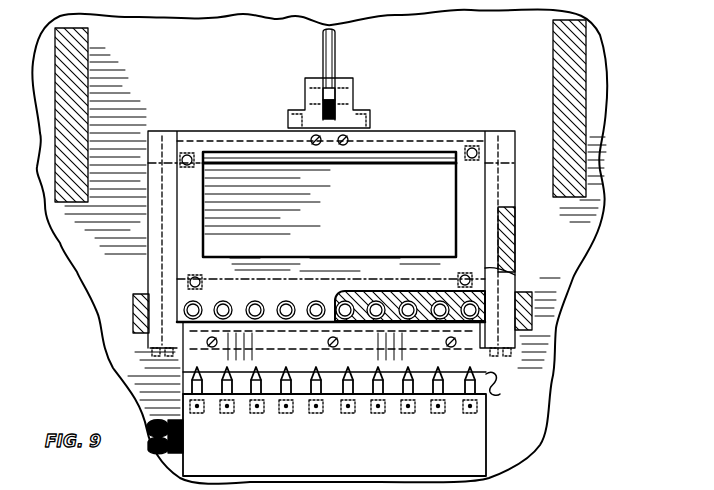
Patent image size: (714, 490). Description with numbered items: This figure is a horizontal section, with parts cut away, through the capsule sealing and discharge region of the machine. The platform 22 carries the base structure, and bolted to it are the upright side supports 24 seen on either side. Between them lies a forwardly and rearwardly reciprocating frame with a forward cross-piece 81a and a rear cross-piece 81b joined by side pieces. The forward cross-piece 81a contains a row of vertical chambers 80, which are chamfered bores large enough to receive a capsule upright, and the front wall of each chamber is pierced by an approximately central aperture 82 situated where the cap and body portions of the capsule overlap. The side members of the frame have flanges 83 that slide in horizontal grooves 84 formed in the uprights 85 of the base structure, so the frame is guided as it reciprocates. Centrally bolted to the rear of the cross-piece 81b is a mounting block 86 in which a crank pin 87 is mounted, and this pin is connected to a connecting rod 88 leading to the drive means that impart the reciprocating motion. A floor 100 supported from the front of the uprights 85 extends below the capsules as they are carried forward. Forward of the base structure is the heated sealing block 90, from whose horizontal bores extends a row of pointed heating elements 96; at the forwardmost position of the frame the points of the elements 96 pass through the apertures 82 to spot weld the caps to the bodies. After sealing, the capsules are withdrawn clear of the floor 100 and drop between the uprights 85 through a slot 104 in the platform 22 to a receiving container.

The platform 22 is at (201, 72).
The upright side supports 24 is at (88, 85).
The vertical chambers 80 is at (386, 292).
The forward cross-piece 81a is at (329, 204).
The rear cross-piece 81b is at (398, 153).
The aperture 82 is at (302, 324).
The flanges 83 is at (498, 205).
The horizontal grooves 84 is at (500, 240).
The uprights 85 is at (148, 272).
The mounting block 86 is at (320, 114).
The crank pin 87 is at (354, 95).
The connecting rod 88 is at (336, 55).
The heated sealing block 90 is at (340, 448).
The pointed heating elements 96 is at (346, 371).
The floor 100 is at (329, 358).
The slot 104 is at (343, 412).